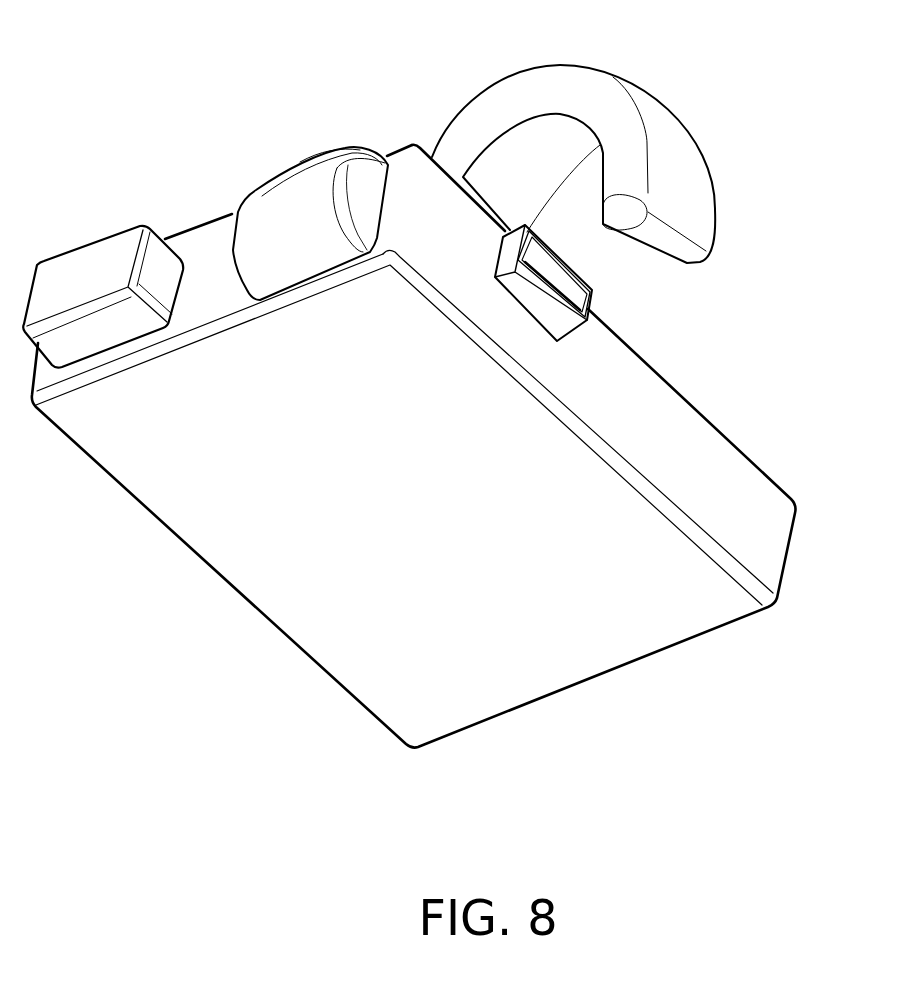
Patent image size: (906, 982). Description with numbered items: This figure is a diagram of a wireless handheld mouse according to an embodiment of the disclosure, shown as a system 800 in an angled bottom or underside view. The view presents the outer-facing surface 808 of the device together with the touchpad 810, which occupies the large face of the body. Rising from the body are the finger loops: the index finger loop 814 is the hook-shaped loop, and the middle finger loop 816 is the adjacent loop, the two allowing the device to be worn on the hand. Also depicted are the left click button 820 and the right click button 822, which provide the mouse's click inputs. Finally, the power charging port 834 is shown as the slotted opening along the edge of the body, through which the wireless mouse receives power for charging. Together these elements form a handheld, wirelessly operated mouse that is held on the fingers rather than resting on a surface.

The system 800 is at (189, 46).
The outer-facing surface 808 is at (258, 493).
The touchpad 810 is at (550, 597).
The index finger loop 814 is at (670, 152).
The middle finger loop 816 is at (346, 148).
The left click button 820 is at (268, 217).
The right click button 822 is at (103, 257).
The power charging port 834 is at (563, 298).